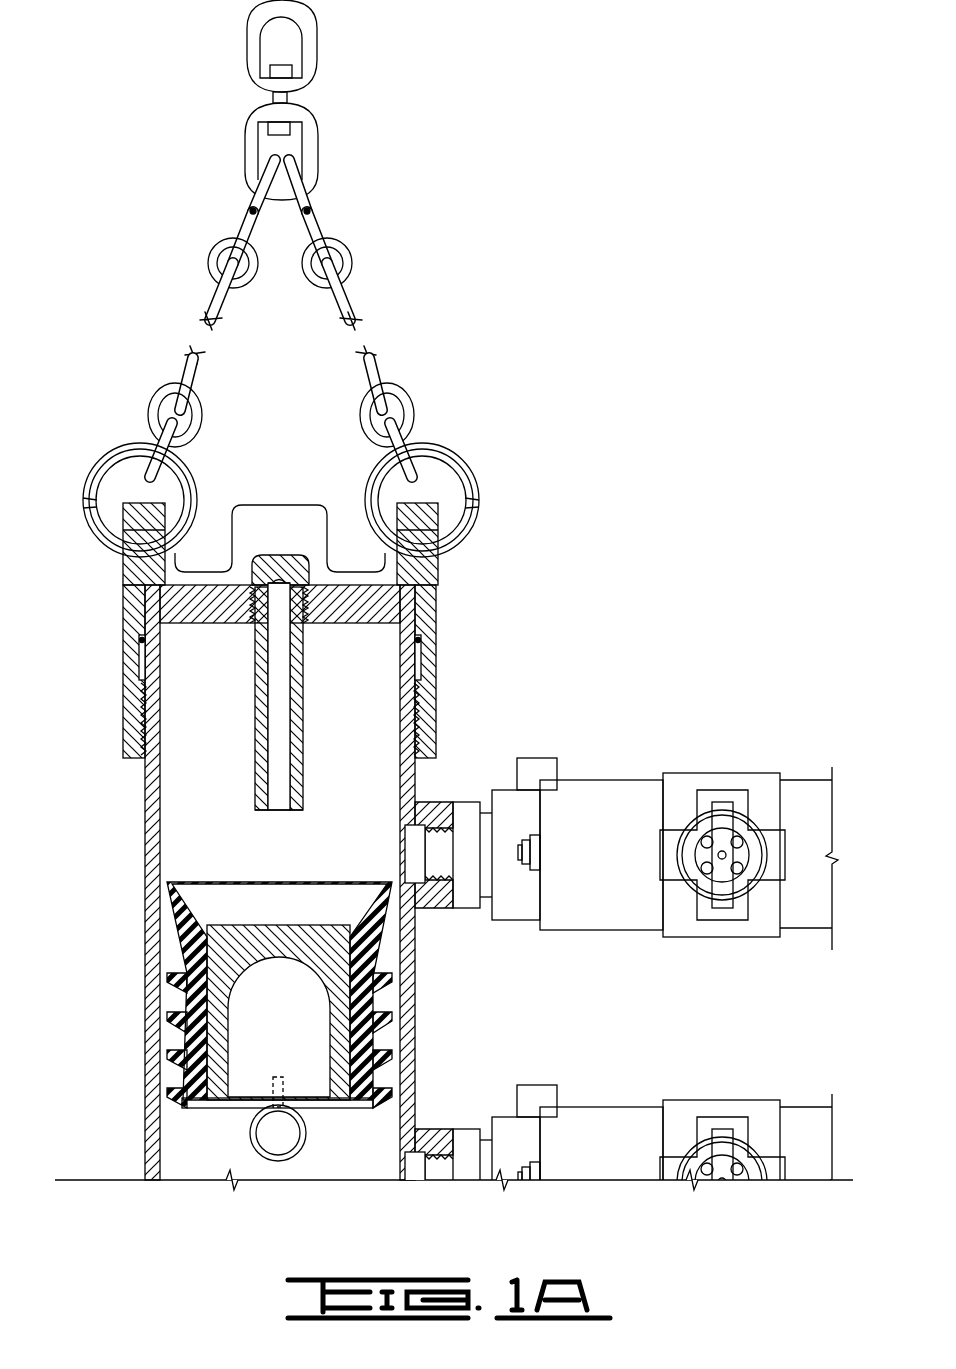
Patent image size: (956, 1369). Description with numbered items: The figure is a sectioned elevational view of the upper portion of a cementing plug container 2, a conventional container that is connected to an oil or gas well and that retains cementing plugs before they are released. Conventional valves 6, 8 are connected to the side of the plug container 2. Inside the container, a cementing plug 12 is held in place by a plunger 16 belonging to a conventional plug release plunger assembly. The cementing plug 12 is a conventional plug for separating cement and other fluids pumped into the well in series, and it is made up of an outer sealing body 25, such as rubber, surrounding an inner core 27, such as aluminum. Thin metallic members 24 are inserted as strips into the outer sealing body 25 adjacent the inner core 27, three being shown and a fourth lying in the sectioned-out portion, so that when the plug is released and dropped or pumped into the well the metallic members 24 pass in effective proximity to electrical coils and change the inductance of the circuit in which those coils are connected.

The plug container 2 is at (140, 808).
The valve 6 is at (605, 1107).
The valve 8 is at (598, 780).
The cementing plug 12 is at (180, 943).
The plunger 16 is at (278, 1140).
The metallic member 24 is at (280, 1077).
The outer sealing body 25 is at (180, 1030).
The inner core 27 is at (340, 1038).